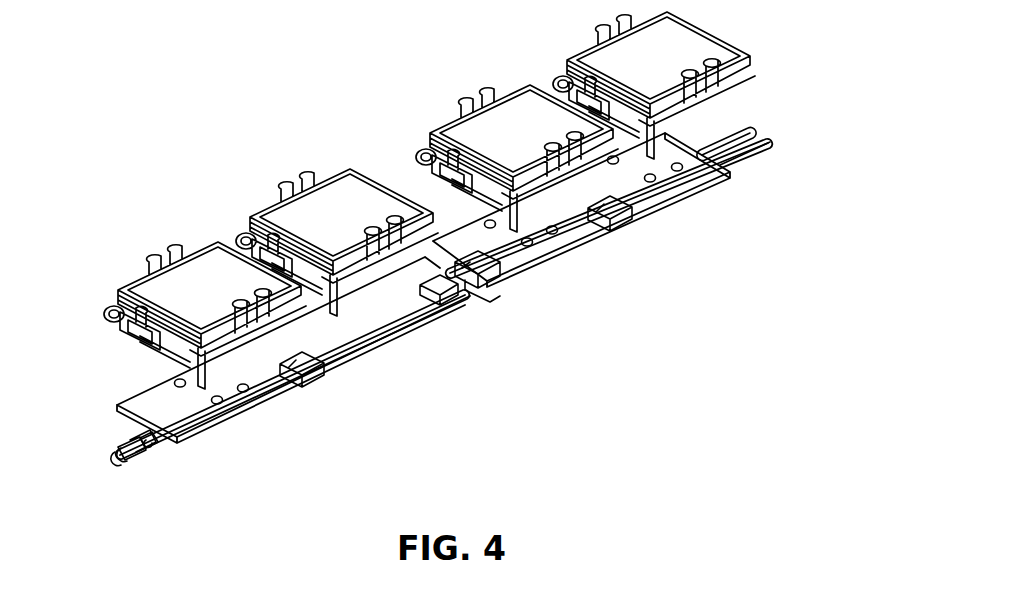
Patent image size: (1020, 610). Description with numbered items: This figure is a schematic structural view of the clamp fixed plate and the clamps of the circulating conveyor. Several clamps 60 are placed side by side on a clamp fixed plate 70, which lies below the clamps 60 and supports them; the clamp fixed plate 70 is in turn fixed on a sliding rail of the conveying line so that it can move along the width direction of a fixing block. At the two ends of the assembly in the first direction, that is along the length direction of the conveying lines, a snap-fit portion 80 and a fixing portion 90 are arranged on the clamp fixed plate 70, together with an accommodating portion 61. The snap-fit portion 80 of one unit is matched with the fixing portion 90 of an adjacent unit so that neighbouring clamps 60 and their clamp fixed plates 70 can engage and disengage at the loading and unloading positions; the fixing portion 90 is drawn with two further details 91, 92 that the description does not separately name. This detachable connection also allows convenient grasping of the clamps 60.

The clamp 60 is at (428, 146).
The accommodating portion 61 is at (614, 217).
The clamp fixed plate 70 is at (513, 253).
The snap-fit portion 80 is at (765, 136).
The fixing portion 90 is at (197, 462).
The end cap 91 is at (136, 463).
The fastener 92 is at (148, 451).